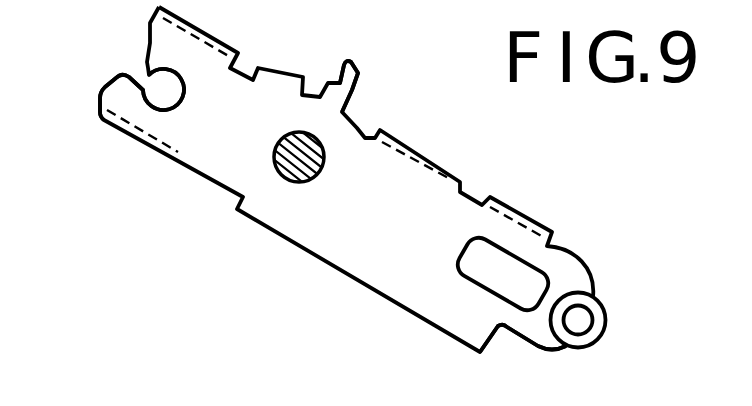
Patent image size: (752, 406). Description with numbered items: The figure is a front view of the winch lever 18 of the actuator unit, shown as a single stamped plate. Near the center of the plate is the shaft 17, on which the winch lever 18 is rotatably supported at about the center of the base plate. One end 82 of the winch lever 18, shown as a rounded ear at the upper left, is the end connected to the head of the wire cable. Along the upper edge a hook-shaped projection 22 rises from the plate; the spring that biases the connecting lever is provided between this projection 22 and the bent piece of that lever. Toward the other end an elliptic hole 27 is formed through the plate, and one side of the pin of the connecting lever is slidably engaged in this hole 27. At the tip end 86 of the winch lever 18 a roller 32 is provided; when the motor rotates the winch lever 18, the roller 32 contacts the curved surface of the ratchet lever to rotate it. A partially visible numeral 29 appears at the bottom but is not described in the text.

The winch lever 18 is at (297, 208).
The shaft 17 is at (300, 155).
The projection 22 is at (358, 73).
The elliptic hole 27 is at (518, 276).
The roller 32 is at (592, 320).
The one end 82 is at (163, 88).
The tip end 86 is at (522, 323).
The lower plate 29 is at (180, 395).